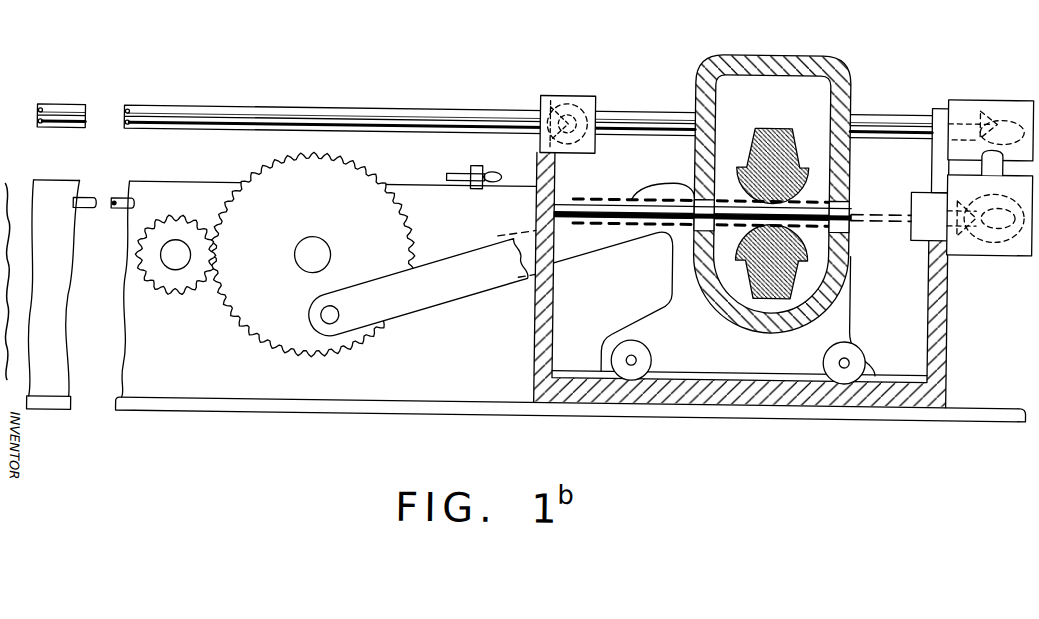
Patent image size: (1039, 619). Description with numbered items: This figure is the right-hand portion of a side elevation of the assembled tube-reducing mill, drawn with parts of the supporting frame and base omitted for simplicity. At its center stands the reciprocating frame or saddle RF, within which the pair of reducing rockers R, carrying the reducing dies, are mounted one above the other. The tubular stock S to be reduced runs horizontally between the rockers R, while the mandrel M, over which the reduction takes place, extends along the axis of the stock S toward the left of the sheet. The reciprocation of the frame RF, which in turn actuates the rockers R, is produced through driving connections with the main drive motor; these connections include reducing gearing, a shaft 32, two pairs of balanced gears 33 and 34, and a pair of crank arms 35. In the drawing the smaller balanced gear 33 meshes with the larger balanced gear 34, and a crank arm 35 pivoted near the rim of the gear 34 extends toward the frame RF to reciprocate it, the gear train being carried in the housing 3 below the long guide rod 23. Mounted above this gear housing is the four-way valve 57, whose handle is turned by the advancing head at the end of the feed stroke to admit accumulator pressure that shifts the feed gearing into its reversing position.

The guide rod 23 is at (313, 110).
The gear housing 3 is at (181, 186).
The mandrel M is at (112, 214).
The shaft 32 is at (166, 297).
The balanced gears 33 is at (190, 297).
The balanced gears 34 is at (296, 358).
The crank arms 35 is at (459, 300).
The four-way valve 57 is at (470, 170).
The tubular stock S is at (597, 223).
The reducing rockers R is at (772, 213).
The reciprocating frame RF is at (836, 57).